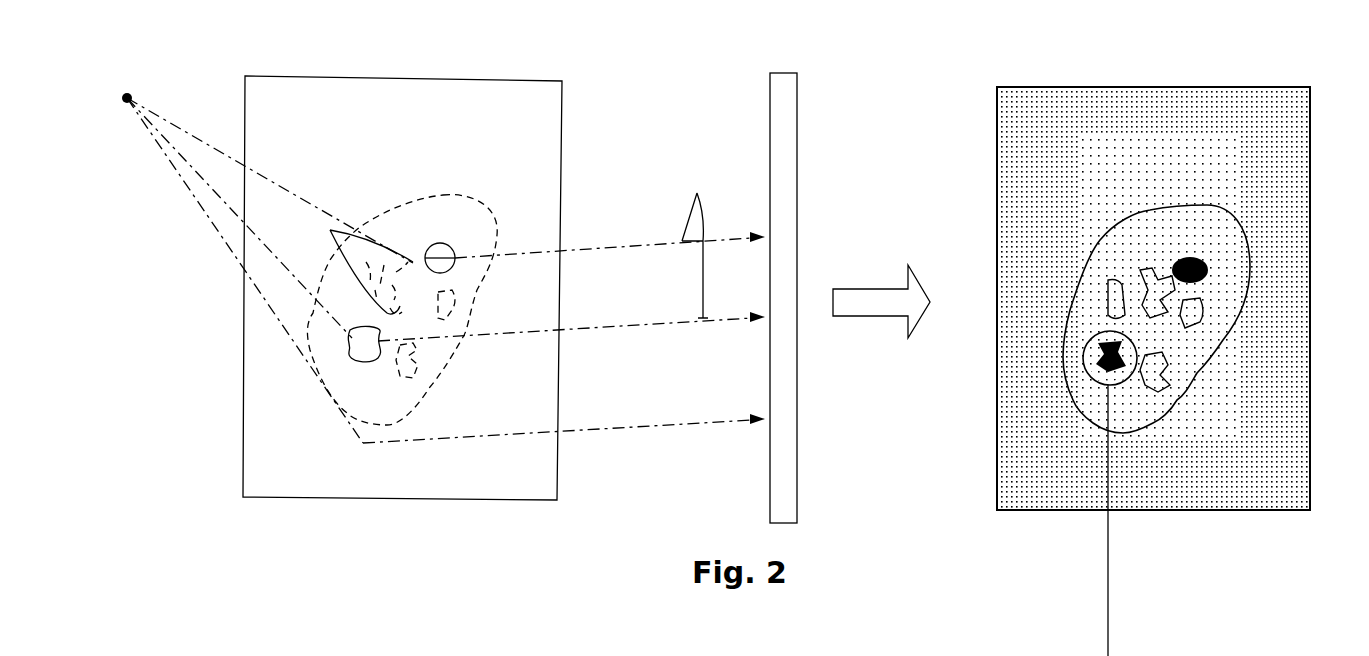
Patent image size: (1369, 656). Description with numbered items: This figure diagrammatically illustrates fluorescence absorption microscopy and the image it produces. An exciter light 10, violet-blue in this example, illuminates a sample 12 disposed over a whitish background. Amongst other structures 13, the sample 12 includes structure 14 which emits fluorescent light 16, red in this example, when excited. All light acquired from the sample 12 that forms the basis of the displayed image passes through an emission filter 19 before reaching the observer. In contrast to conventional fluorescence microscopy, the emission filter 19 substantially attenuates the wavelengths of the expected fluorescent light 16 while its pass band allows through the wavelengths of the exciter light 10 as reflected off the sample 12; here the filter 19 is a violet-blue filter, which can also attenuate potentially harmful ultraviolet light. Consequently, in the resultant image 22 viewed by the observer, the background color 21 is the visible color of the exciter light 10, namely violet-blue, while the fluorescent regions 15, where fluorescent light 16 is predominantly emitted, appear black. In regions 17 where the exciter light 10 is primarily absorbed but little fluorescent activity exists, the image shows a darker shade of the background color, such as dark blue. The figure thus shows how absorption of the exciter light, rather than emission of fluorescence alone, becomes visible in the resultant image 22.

The exciter light 10 is at (122, 102).
The sample 12 is at (512, 105).
The other structures 13 is at (358, 265).
The structure 14 is at (450, 246).
The fluorescent regions 15 is at (1188, 266).
The fluorescent light 16 is at (696, 244).
The regions 17 is at (1208, 207).
The emission filter 19 is at (797, 140).
The background color 21 is at (1153, 298).
The resultant image 22 is at (1229, 78).